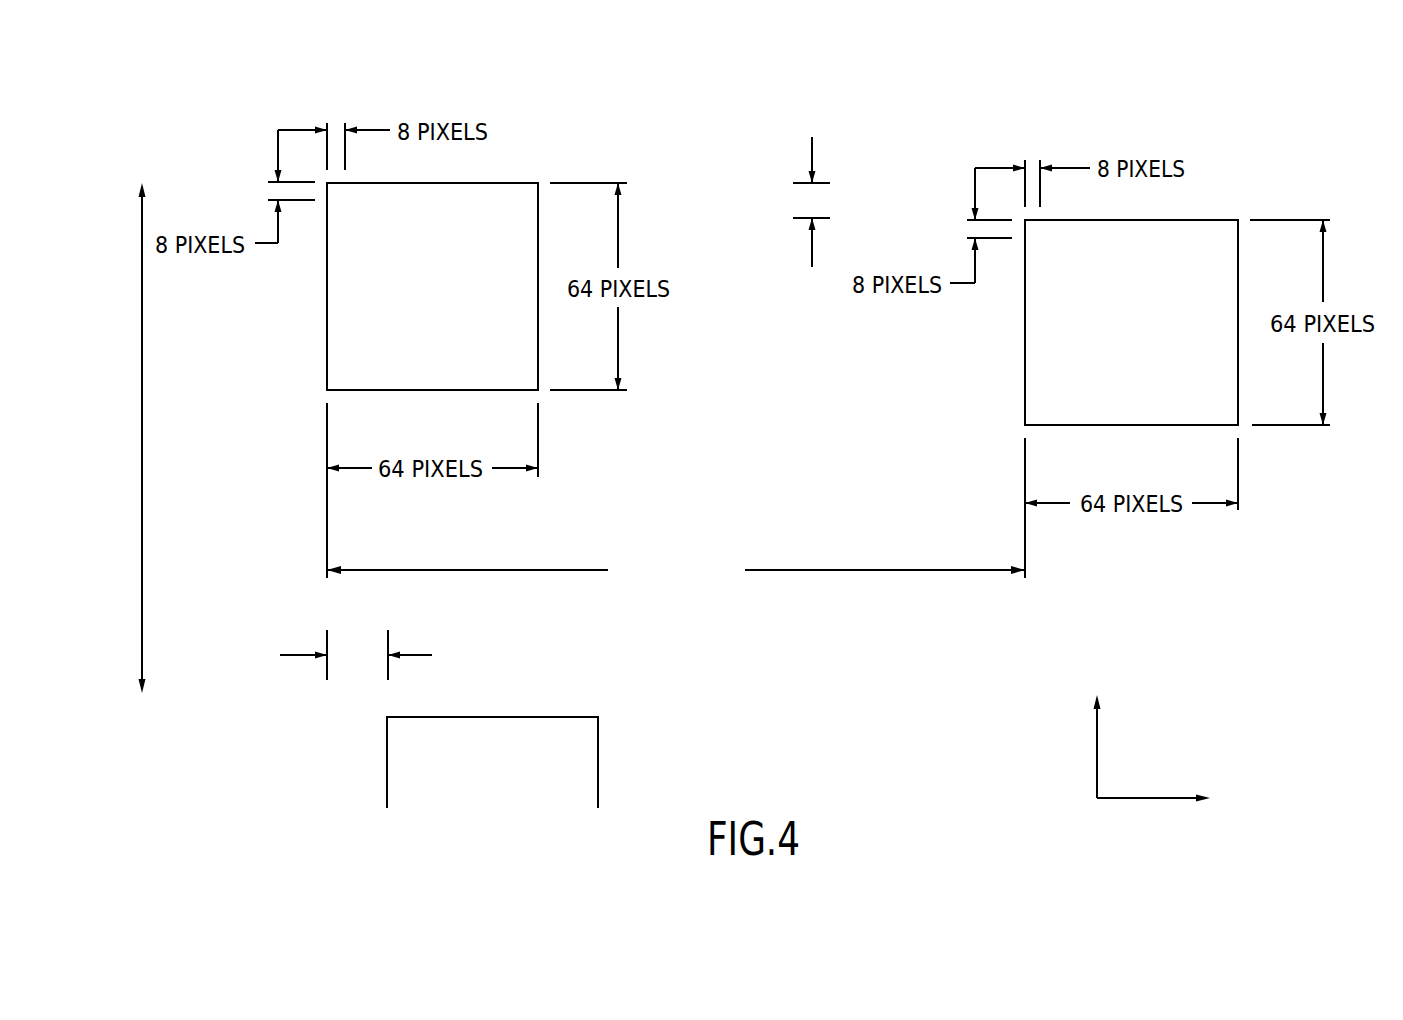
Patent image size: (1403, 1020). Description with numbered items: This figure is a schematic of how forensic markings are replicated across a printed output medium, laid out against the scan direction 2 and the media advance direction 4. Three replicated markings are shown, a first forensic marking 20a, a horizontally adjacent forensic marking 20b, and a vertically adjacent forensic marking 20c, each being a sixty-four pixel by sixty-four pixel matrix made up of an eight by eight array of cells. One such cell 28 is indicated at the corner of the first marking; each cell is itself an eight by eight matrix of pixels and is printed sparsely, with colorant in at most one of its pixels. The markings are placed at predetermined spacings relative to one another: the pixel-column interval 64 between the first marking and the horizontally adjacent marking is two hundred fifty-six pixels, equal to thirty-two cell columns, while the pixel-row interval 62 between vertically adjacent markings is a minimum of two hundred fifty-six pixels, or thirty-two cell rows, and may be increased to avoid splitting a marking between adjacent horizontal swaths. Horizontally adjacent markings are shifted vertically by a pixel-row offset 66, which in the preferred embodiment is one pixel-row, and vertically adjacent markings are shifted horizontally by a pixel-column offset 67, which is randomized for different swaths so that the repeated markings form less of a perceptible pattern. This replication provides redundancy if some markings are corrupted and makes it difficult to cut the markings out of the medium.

The forensic marking 20a is at (490, 183).
The forensic marking 20b is at (1213, 218).
The forensic marking 20c is at (598, 758).
The cell 28 is at (337, 200).
The pixel-row interval 62 is at (142, 337).
The pixel-column interval 64 is at (852, 570).
The pixel-row offset 66 is at (808, 197).
The pixel-column offset 67 is at (350, 645).
The media advance direction 4 is at (1097, 767).
The scan direction 2 is at (1140, 802).